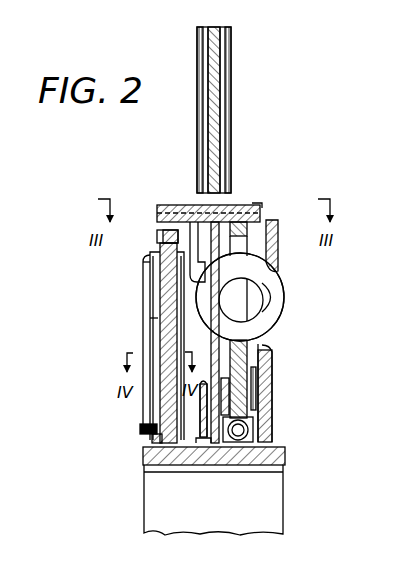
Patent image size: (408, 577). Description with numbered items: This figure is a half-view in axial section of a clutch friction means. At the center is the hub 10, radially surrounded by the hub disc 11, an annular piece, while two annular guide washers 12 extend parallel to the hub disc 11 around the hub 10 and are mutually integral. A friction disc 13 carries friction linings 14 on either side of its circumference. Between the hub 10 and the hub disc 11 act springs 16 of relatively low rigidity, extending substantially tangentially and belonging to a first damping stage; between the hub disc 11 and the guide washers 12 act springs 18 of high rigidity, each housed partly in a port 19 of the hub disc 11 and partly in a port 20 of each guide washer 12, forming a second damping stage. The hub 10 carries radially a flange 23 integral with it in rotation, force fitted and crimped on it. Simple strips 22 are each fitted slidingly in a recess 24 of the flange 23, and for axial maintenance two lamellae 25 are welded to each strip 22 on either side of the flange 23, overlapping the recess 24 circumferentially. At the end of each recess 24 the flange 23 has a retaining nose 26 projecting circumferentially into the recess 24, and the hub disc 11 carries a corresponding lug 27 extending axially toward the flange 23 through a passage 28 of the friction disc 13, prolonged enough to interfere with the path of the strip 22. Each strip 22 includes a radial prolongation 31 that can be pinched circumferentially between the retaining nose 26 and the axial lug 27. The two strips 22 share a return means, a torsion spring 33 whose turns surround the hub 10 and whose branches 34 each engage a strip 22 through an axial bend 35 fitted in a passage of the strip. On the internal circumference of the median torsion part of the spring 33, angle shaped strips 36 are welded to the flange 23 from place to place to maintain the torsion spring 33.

The hub 10 is at (141, 486).
The hub disc 11 is at (273, 381).
The guide washers 12 is at (195, 232).
The friction disc 13 is at (240, 102).
The friction linings 14 is at (206, 70).
The springs 16 is at (226, 462).
The springs 18 is at (278, 290).
The port 19 is at (251, 362).
The port 20 is at (276, 266).
The strips 22 is at (245, 300).
The flange 23 is at (155, 402).
The recess 24 is at (168, 372).
The lamellae 25 is at (156, 300).
The retaining nose 26 is at (170, 205).
The lug 27 is at (260, 202).
The passage 28 is at (232, 208).
The radial prolongation 31 is at (153, 243).
The torsion spring 33 is at (140, 426).
The branches 34 is at (148, 318).
The axial bend 35 is at (143, 252).
The angle shaped strips 36 is at (137, 437).